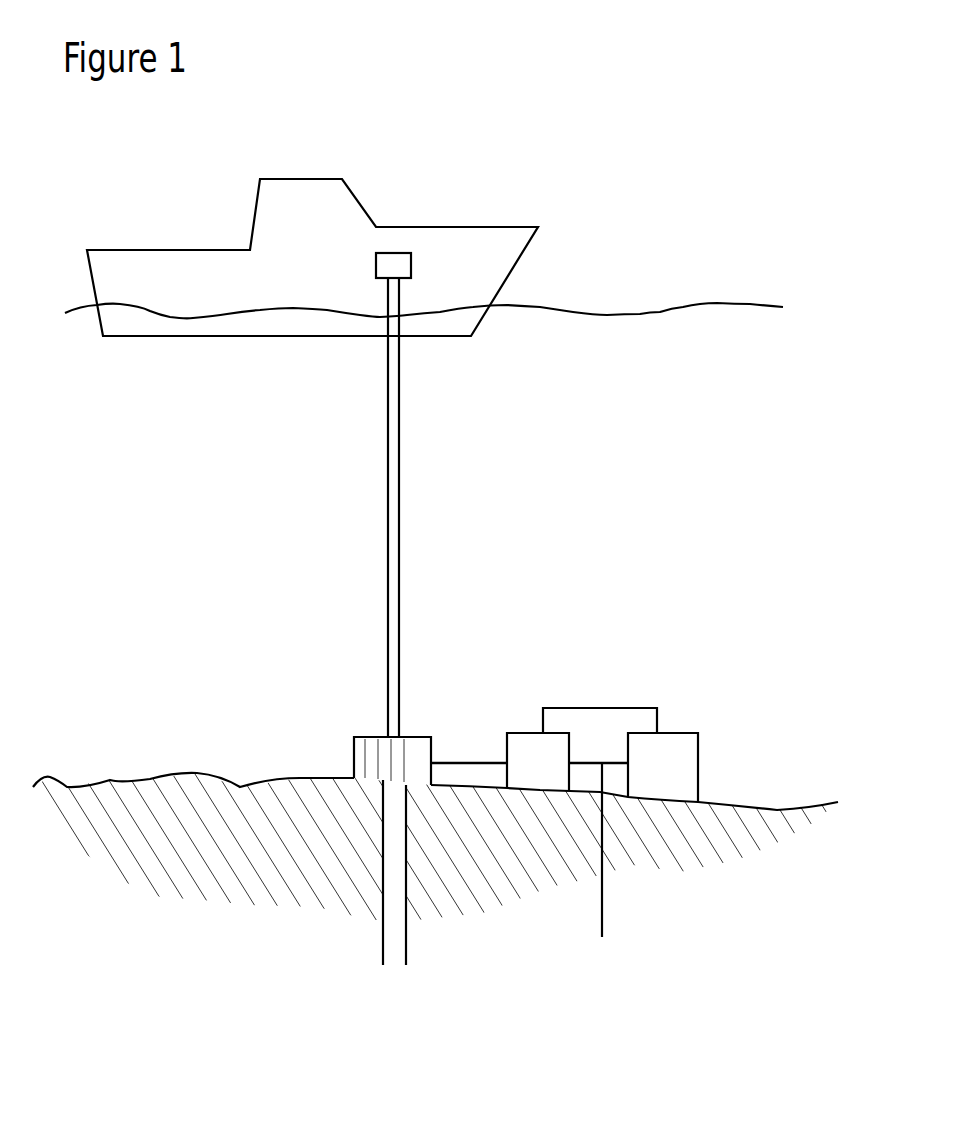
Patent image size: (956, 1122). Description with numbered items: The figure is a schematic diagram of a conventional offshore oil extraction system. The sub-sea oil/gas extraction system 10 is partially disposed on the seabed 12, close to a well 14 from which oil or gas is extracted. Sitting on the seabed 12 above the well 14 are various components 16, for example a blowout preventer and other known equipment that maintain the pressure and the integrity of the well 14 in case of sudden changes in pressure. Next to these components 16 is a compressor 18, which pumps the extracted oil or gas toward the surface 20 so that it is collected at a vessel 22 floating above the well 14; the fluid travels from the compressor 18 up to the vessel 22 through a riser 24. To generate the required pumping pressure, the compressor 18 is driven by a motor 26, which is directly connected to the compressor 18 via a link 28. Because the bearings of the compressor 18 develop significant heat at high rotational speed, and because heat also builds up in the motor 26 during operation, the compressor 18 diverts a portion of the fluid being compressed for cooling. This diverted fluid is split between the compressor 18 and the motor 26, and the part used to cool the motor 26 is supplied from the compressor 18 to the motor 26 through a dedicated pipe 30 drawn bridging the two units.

The sub-sea oil/gas extraction system 10 is at (472, 135).
The seabed 12 is at (120, 787).
The well 14 is at (385, 879).
The components 16 is at (422, 737).
The compressor 18 is at (533, 760).
The surface 20 is at (650, 312).
The vessel 22 is at (525, 239).
The riser 24 is at (395, 465).
The motor 26 is at (677, 759).
The link 28 is at (607, 863).
The dedicated pipe 30 is at (606, 708).